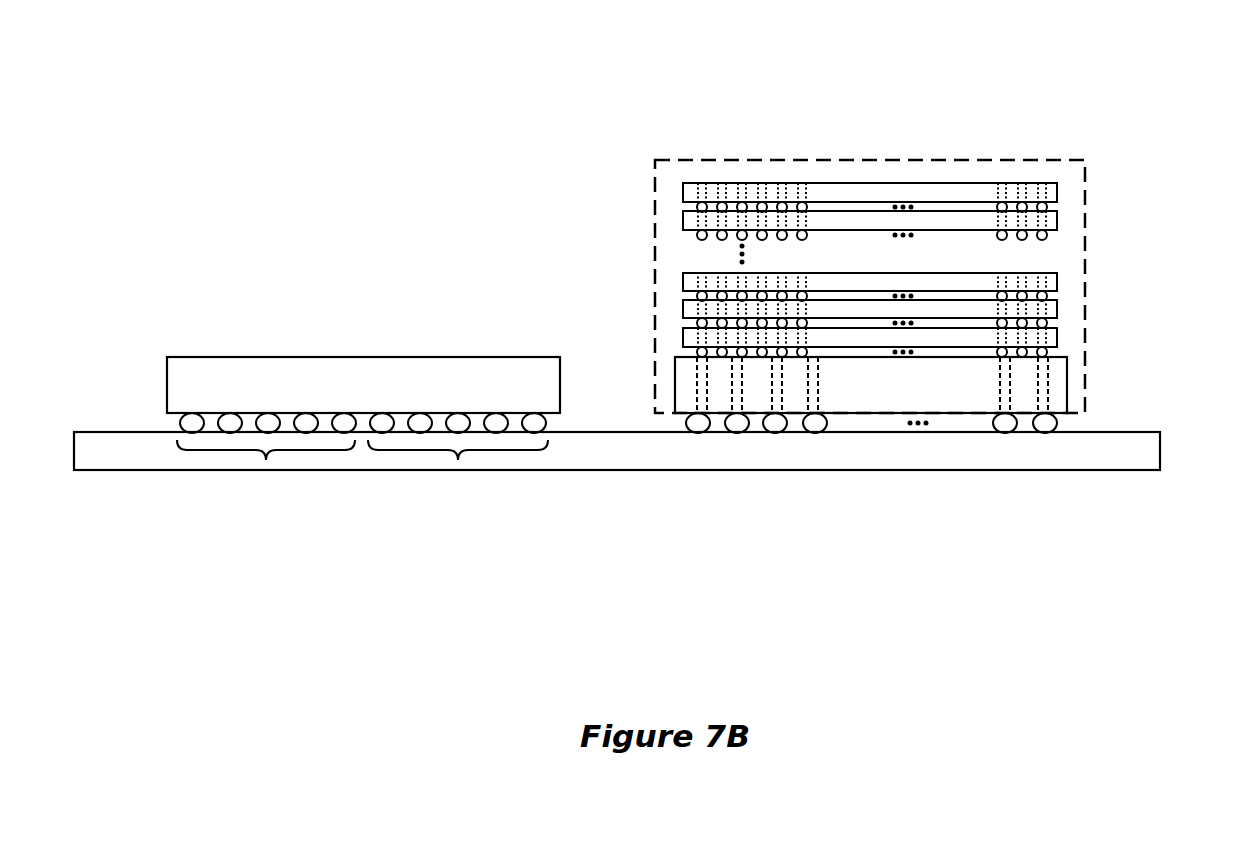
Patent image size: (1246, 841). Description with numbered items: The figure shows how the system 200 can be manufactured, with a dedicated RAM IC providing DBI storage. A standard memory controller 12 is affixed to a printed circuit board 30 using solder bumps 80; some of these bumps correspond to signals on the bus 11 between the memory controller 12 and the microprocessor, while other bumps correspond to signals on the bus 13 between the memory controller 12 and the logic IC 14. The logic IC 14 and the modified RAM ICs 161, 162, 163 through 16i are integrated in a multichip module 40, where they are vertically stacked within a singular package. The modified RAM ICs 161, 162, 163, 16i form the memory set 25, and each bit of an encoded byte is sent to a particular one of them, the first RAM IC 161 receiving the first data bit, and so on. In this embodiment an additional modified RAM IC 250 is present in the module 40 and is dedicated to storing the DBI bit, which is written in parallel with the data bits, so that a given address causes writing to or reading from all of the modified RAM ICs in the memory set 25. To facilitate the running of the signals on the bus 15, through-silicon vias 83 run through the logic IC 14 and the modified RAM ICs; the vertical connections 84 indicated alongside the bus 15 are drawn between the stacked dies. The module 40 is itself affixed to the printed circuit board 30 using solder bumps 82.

The system 200 is at (418, 78).
The printed circuit board 30 is at (617, 451).
The memory controller 12 is at (363, 385).
The bus 11 is at (266, 456).
The bus 13 is at (761, 461).
The solder bumps 82 is at (1085, 423).
The solder bumps 80 is at (165, 423).
The multichip module 40 is at (765, 145).
The logic IC 14 is at (1082, 378).
The memory set 25 is at (950, 269).
The modified RAM IC 250 is at (1074, 192).
The modified RAM IC 16i is at (1074, 221).
The modified RAM IC 163 is at (1074, 282).
The modified RAM IC 162 is at (1074, 309).
The modified RAM IC 161 is at (918, 341).
The through-silicon vias 83 is at (806, 222).
The bus 15 is at (602, 278).
The vertical connections between stacked dies 84 is at (670, 351).